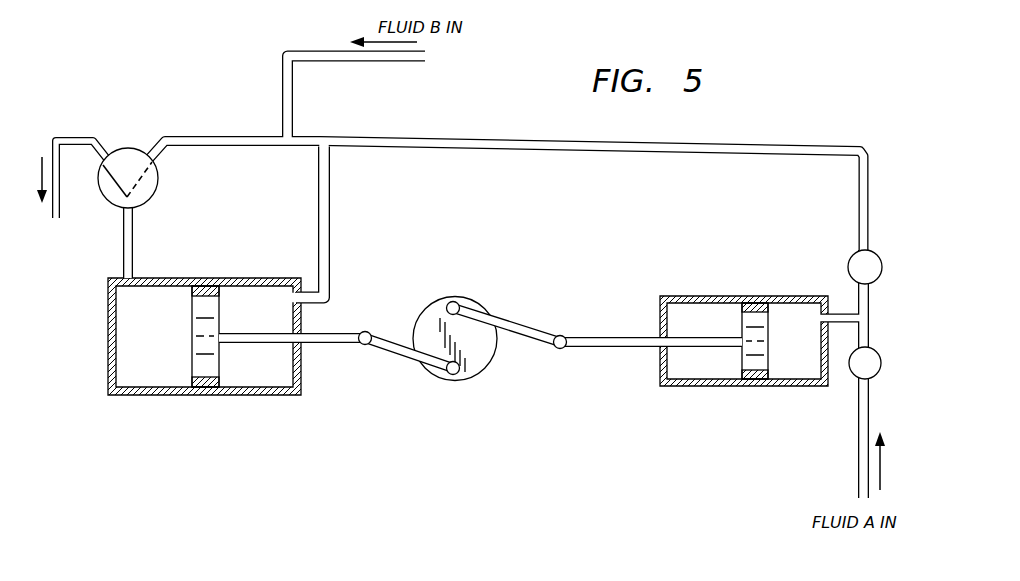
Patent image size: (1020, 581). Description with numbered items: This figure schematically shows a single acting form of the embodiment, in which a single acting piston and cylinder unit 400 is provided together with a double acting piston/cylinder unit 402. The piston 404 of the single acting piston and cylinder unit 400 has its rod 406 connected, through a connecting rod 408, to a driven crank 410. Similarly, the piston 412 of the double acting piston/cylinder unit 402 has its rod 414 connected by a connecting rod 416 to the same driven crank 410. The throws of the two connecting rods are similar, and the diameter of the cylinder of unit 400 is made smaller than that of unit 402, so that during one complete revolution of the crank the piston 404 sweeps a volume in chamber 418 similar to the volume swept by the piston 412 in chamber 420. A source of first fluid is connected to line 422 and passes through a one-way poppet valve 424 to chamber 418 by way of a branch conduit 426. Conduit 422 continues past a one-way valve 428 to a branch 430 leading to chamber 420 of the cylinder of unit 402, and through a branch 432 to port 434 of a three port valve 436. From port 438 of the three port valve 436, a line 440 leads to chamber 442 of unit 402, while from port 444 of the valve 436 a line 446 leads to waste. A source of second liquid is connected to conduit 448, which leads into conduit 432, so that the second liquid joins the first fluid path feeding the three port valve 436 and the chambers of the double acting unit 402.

The single acting piston and cylinder unit 400 is at (684, 390).
The double acting piston/cylinder unit 402 is at (263, 400).
The piston 404 is at (752, 303).
The rod 406 is at (600, 338).
The connecting rod 408 is at (510, 320).
The driven crank 410 is at (432, 305).
The piston 412 is at (206, 395).
The rod 414 is at (328, 345).
The connecting rod 416 is at (384, 341).
The chamber 418 is at (800, 366).
The chamber 420 is at (258, 300).
The line 422 is at (857, 455).
The one-way poppet valve 424 is at (876, 351).
The branch conduit 426 is at (832, 318).
The one-way valve 428 is at (876, 255).
The branch 430 is at (327, 206).
The branch 432 is at (210, 137).
The port 434 is at (152, 166).
The three port valve 436 is at (132, 138).
The port 438 is at (137, 207).
The line 440 is at (134, 242).
The chamber 442 is at (148, 380).
The port 444 is at (101, 170).
The line 446 is at (74, 138).
The conduit 448 is at (313, 51).